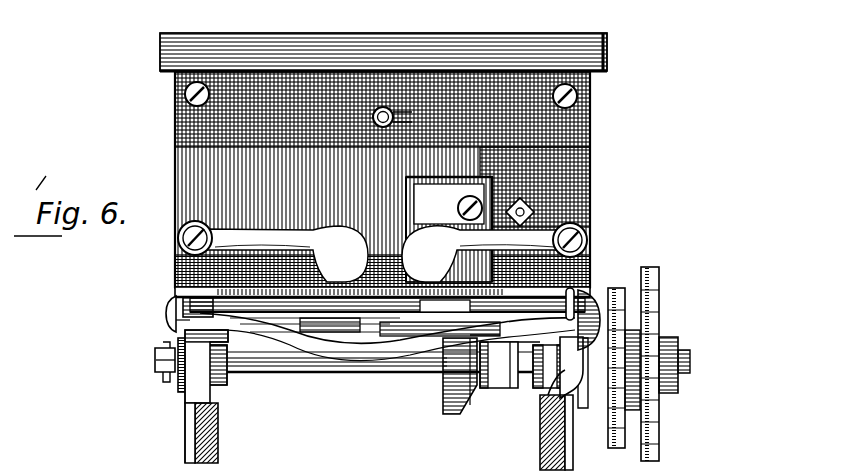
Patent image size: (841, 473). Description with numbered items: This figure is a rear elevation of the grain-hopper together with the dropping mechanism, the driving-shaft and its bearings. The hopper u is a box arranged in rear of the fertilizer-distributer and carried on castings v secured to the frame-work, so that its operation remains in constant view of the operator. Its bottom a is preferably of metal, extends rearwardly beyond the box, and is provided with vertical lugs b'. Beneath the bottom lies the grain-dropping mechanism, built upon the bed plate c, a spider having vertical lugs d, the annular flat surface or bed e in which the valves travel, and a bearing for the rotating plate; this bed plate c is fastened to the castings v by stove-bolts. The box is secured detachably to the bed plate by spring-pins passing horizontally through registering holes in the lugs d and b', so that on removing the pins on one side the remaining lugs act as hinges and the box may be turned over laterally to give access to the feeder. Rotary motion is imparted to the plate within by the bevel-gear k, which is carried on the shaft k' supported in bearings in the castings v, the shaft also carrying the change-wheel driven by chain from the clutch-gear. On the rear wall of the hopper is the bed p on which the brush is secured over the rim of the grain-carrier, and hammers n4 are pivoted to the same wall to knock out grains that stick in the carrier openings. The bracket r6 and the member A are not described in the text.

The hopper u is at (178, 120).
The bed p is at (449, 216).
The diamond guide r6 is at (538, 206).
The hammers n4 is at (382, 251).
The bottom a is at (182, 289).
The bed plate c is at (284, 326).
The shaft k' is at (393, 374).
The bevel-gear k is at (460, 383).
The castings v is at (187, 405).
The legs A is at (220, 414).
The vertical lugs b' is at (381, 291).
The vertical lugs d is at (176, 325).
The annular flat bed e is at (645, 275).